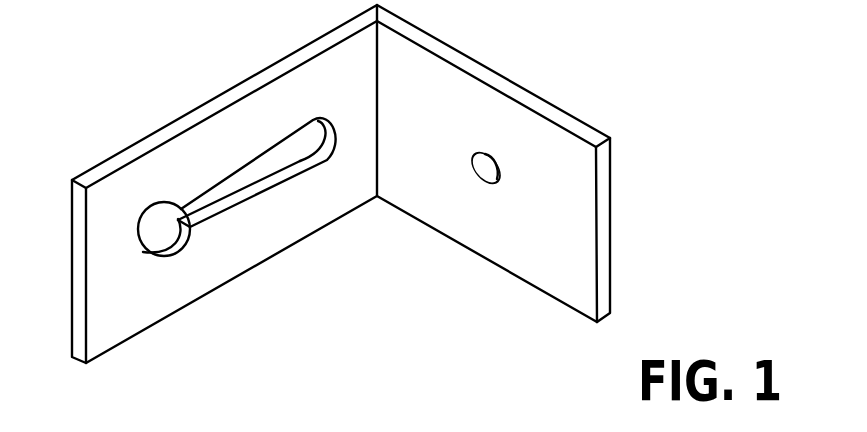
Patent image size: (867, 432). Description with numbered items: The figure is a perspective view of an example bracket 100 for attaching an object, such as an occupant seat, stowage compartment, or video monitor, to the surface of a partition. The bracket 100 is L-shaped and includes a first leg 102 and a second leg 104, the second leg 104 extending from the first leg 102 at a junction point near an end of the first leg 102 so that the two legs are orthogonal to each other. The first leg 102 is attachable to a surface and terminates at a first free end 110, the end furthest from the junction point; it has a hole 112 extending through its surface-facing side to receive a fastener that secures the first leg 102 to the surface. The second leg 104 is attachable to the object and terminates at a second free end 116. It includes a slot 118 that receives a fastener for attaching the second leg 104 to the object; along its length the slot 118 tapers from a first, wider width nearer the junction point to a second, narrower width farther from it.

The bracket 100 is at (95, 58).
The first leg 102 is at (498, 73).
The second leg 104 is at (263, 262).
The first free end 110 is at (610, 268).
The hole 112 is at (490, 183).
The second free end 116 is at (72, 277).
The slot 118 is at (258, 195).